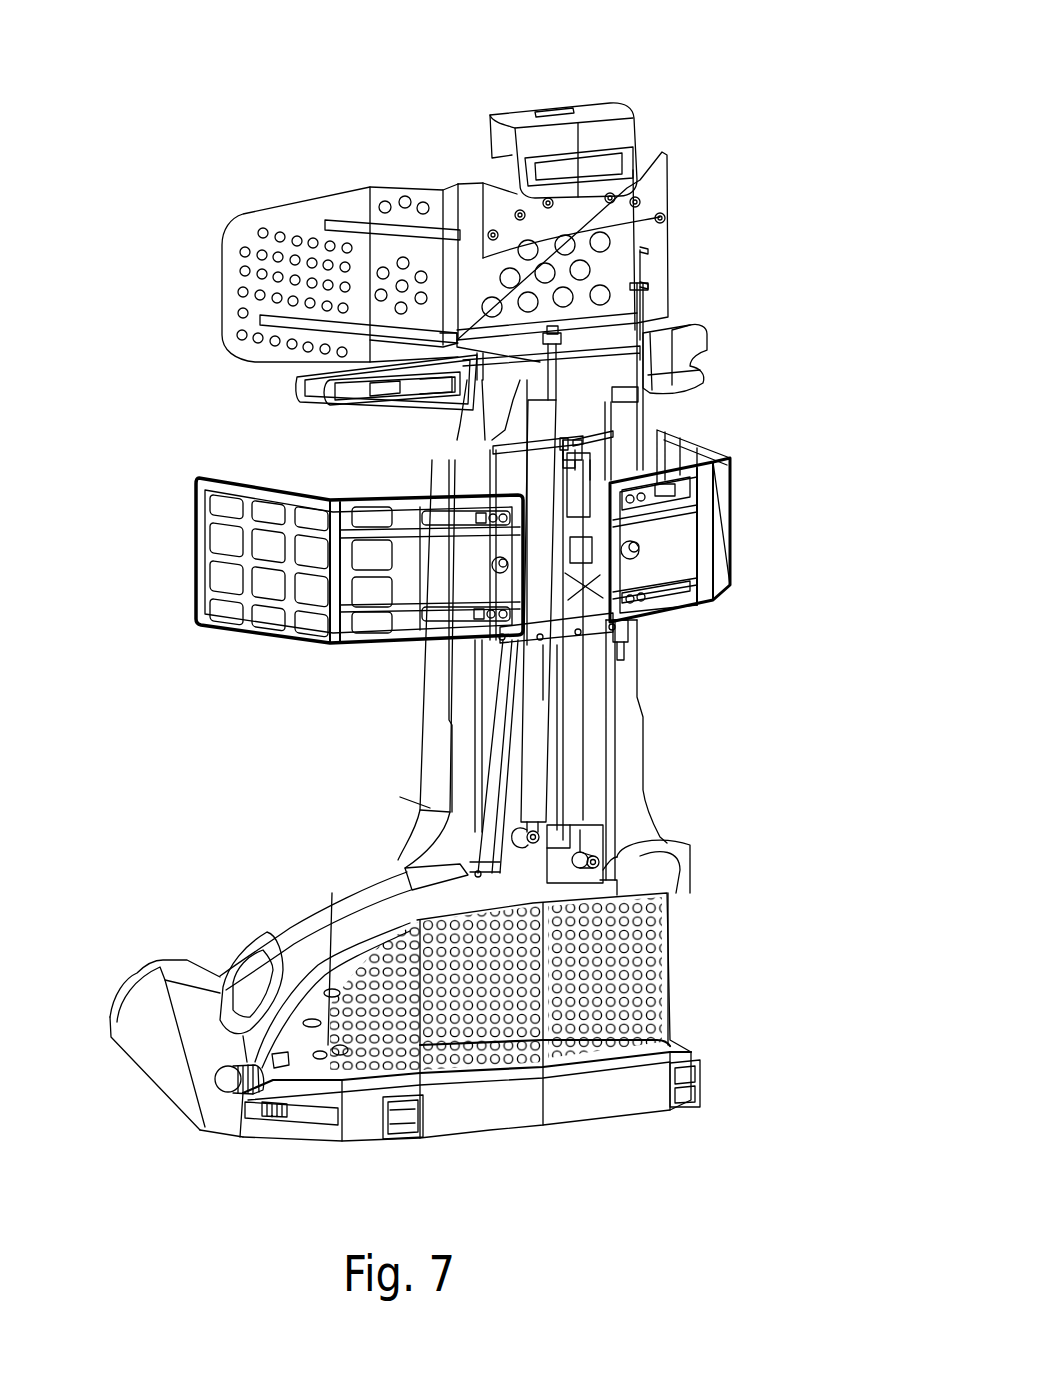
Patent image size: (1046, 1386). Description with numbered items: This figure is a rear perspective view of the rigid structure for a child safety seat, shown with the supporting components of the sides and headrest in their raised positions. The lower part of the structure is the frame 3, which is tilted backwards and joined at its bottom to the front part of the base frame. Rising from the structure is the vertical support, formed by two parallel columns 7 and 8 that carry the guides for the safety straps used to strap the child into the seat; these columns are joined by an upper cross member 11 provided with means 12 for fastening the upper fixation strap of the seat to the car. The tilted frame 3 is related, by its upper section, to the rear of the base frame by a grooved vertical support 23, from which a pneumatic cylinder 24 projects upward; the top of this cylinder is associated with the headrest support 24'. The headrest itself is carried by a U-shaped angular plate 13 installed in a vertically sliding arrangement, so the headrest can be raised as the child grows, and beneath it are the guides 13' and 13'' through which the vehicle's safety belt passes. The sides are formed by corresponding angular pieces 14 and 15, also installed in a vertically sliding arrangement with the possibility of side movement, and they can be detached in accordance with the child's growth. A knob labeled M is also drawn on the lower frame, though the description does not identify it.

The headrest support 24' is at (584, 113).
The angular plate 13 is at (388, 257).
The guide 13' is at (730, 341).
The guide 13'' is at (386, 411).
The means for fastening the upper fixation strap 12 is at (615, 432).
The upper cross member 11 is at (500, 447).
The angular piece 14 is at (204, 534).
The angular piece 15 is at (735, 530).
The pneumatic cylinder 24 is at (676, 645).
The column 8 is at (615, 742).
The column 7 is at (465, 765).
The grooved vertical support 23 is at (498, 783).
The tilted frame 3 is at (647, 857).
The adjustment knob M is at (233, 1100).